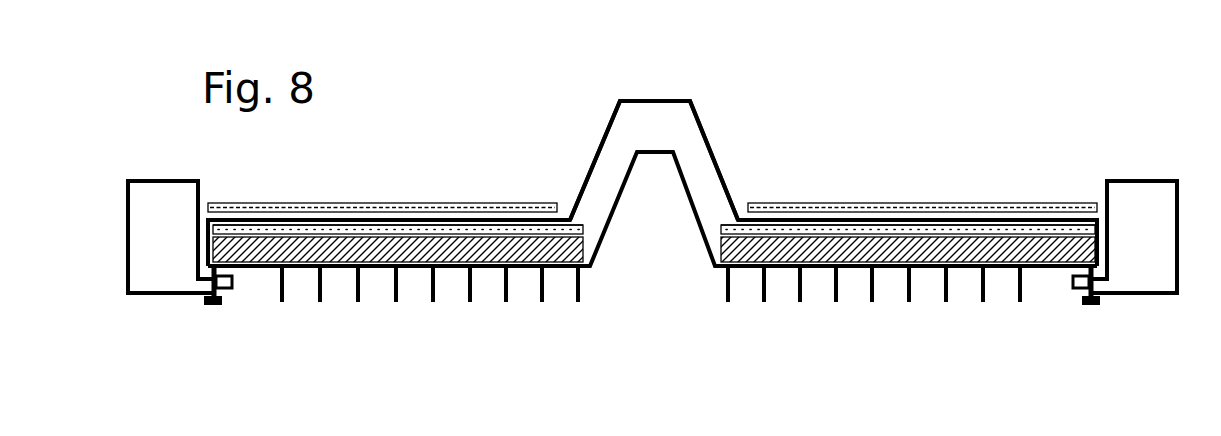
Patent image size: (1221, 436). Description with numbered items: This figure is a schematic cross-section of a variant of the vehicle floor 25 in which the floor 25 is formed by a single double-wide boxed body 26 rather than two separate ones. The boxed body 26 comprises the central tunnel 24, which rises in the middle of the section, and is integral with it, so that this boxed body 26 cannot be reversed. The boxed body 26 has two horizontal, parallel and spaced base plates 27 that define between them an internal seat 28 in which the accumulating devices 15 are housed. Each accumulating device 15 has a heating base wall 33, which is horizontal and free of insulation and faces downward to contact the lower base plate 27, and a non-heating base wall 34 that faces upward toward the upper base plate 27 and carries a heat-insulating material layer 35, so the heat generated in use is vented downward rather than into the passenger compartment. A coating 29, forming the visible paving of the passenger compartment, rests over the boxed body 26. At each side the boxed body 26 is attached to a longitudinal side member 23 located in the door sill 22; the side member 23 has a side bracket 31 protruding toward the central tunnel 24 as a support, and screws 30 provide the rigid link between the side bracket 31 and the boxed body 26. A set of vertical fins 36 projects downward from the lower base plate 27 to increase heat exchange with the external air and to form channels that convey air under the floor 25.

The accumulating device 15 is at (652, 261).
The door sill 22 is at (665, 204).
The longitudinal side member 23 is at (131, 180).
The central tunnel 24 is at (652, 99).
The floor 25 is at (563, 360).
The boxed body 26 is at (652, 205).
The base plate 27 is at (277, 218).
The internal seat 28 is at (453, 253).
The coating 29 is at (522, 202).
The screw 30 is at (214, 306).
The side bracket 31 is at (234, 289).
The heating base wall 33 is at (377, 277).
The non-heating base wall 34 is at (348, 213).
The heat-insulating material layer 35 is at (433, 232).
The vertical fin 36 is at (320, 299).